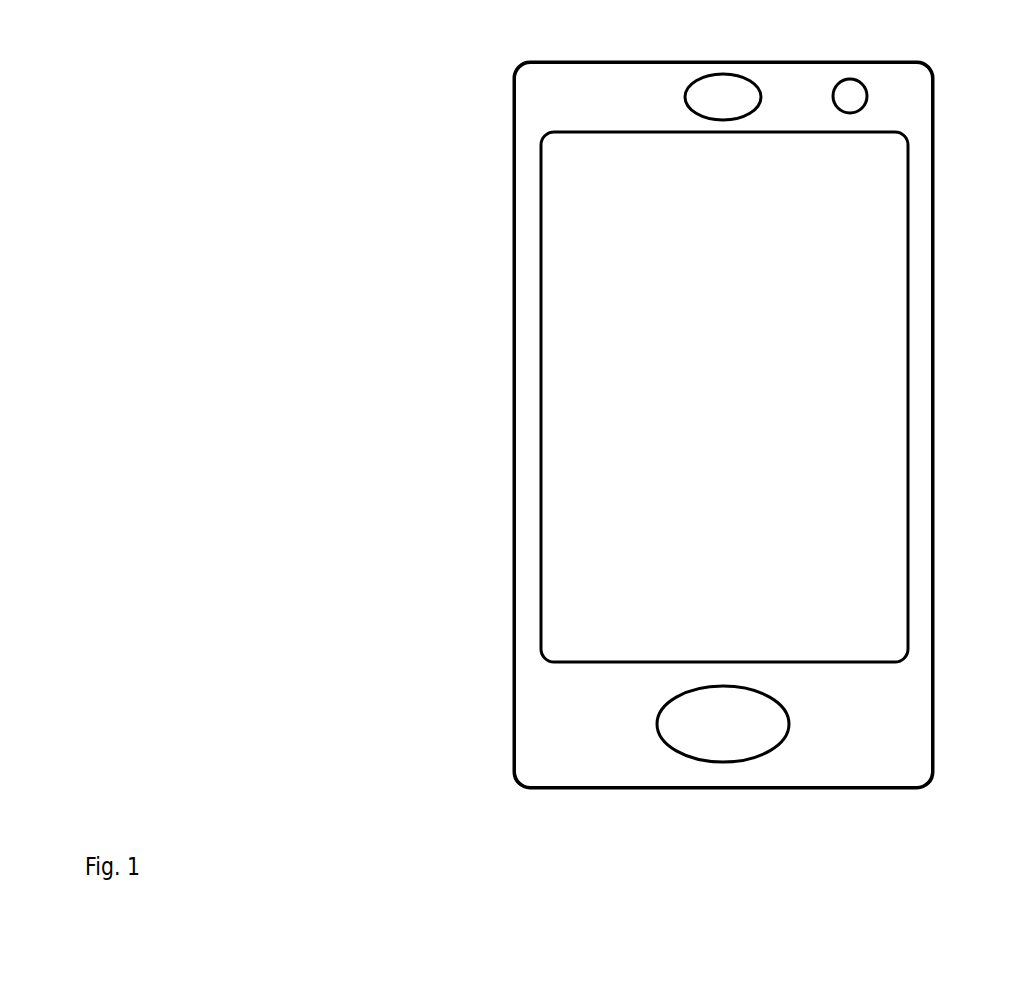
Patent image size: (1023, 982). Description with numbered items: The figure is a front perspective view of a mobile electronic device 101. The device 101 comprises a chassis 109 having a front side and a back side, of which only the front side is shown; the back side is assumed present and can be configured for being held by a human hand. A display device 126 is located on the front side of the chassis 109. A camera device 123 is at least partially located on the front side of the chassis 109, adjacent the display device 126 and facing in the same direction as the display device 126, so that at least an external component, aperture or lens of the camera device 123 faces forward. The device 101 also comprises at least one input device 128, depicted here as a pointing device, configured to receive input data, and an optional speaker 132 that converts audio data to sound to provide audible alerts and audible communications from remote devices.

The mobile electronic device 101 is at (490, 680).
The chassis 109 is at (514, 260).
The camera device 123 is at (869, 97).
The display device 126 is at (744, 376).
The input device 128 is at (745, 736).
The speaker 132 is at (745, 106).